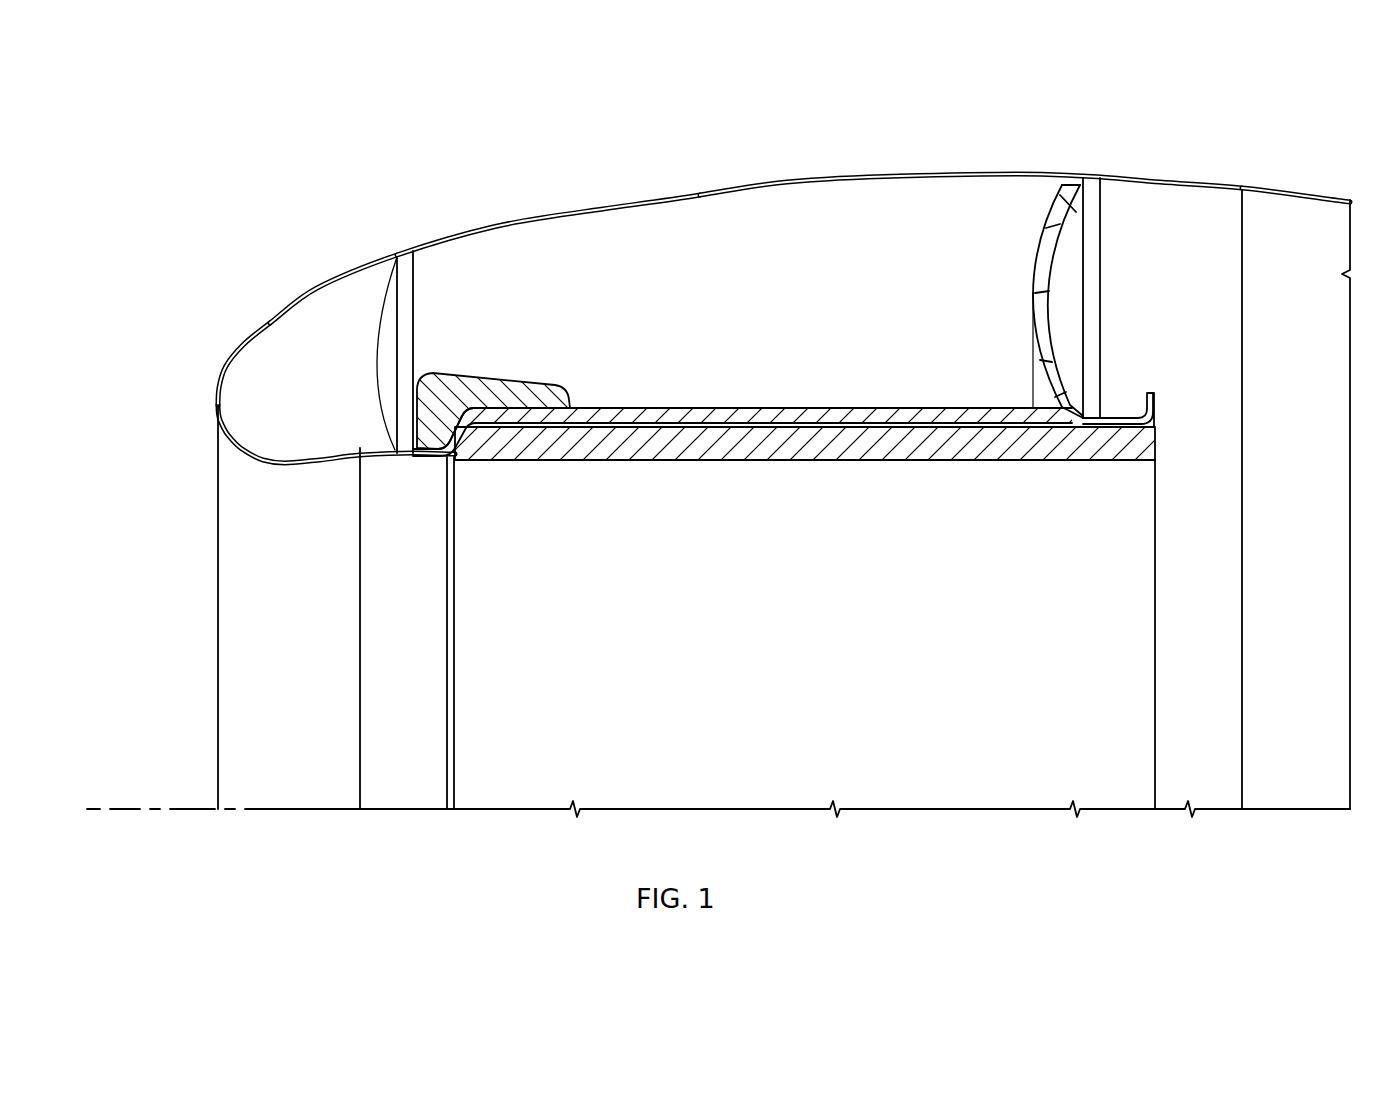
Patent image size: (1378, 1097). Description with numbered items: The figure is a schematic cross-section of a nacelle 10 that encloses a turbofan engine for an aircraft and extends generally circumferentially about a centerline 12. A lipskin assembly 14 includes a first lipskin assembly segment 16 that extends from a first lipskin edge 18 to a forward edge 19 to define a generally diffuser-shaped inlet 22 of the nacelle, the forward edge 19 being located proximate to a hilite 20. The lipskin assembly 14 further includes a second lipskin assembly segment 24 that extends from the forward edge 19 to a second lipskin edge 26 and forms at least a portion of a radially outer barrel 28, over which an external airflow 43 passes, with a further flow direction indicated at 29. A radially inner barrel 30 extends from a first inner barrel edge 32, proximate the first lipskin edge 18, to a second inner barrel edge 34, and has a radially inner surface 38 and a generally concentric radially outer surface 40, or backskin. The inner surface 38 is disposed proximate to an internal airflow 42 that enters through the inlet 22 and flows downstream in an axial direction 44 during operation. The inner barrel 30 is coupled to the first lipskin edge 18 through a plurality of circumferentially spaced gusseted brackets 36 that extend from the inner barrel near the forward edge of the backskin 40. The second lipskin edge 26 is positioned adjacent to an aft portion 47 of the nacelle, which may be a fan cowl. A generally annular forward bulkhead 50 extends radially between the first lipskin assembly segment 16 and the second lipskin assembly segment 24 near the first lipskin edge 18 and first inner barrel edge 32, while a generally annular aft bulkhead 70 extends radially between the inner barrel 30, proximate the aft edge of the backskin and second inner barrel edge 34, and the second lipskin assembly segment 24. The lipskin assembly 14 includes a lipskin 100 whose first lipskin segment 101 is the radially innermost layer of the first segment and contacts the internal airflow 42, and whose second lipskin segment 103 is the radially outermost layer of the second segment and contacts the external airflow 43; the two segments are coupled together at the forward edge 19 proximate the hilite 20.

The nacelle 10 is at (348, 138).
The centerline 12 is at (110, 810).
The lipskin assembly 14 is at (367, 260).
The first lipskin assembly segment 16 is at (320, 462).
The first lipskin edge 18 is at (397, 462).
The forward edge 19 is at (218, 415).
The hilite 20 is at (218, 403).
The inlet 22 is at (210, 613).
The second lipskin assembly segment 24 is at (603, 212).
The second lipskin edge 26 is at (1238, 177).
The radially outer barrel 28 is at (788, 182).
The external airflow direction 29 is at (880, 160).
The radially inner barrel 30 is at (640, 461).
The first inner barrel edge 32 is at (444, 461).
The second inner barrel edge 34 is at (1150, 463).
The gusseted brackets 36 is at (467, 371).
The radially inner surface 38 is at (912, 461).
The radially outer surface 40 is at (740, 407).
The internal airflow 42 is at (817, 562).
The external airflow 43 is at (477, 203).
The axial direction 44 is at (677, 672).
The aft portion 47 is at (1292, 193).
The forward bulkhead 50 is at (413, 277).
The aft bulkhead 70 is at (1050, 211).
The lipskin 100 is at (247, 305).
The first lipskin segment 101 is at (260, 466).
The second lipskin segment 103 is at (322, 278).